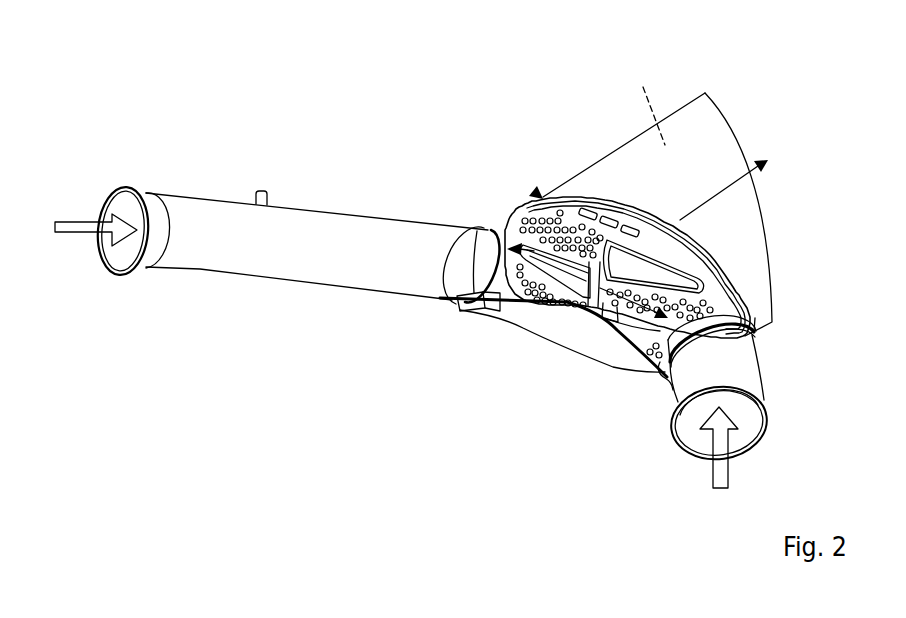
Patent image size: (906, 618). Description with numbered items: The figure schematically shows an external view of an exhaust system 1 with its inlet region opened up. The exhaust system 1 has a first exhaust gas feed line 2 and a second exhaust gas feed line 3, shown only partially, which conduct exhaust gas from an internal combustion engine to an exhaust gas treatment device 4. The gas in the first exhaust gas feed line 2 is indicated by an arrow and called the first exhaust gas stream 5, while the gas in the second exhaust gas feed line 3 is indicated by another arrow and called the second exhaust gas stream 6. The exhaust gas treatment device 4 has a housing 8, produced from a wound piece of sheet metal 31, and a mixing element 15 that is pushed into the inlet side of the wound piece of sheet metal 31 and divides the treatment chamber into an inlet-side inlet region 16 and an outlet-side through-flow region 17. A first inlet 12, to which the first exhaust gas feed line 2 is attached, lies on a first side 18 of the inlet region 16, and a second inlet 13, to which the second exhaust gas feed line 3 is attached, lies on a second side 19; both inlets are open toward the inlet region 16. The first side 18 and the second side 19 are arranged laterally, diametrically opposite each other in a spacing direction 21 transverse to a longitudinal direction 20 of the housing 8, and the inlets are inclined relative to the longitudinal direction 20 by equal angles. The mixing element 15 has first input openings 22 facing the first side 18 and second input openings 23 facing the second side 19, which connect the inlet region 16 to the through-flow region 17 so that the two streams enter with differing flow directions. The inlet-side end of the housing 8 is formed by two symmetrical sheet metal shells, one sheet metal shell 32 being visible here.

The exhaust system 1 is at (360, 108).
The first exhaust gas feed line 2 is at (770, 363).
The second exhaust gas feed line 3 is at (321, 292).
The exhaust gas treatment device 4 is at (544, 113).
The first exhaust gas stream 5 is at (718, 474).
The second exhaust gas stream 6 is at (78, 238).
The housing 8 is at (610, 140).
The first inlet 12 is at (666, 380).
The second inlet 13 is at (487, 245).
The mixing element 15 is at (535, 192).
The inlet region 16 is at (518, 293).
The through-flow region 17 is at (649, 103).
The first side 18 is at (720, 282).
The second side 19 is at (510, 235).
The longitudinal direction 20 is at (712, 197).
The spacing direction 21 is at (568, 294).
The first input opening 22 is at (613, 314).
The second input opening 23 is at (580, 210).
The wound piece of sheet metal 31 is at (700, 120).
The sheet metal shell 32 is at (583, 340).